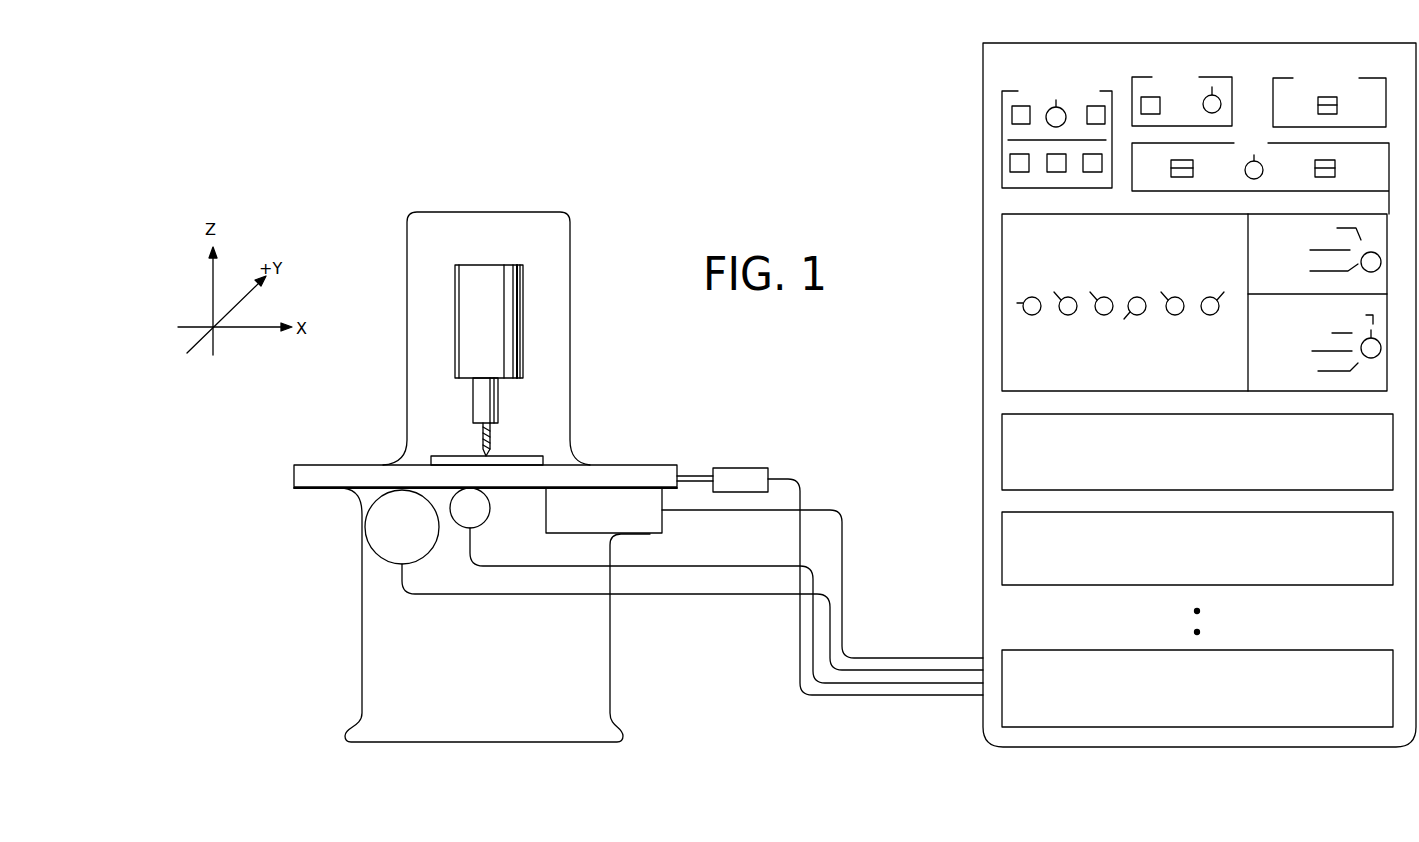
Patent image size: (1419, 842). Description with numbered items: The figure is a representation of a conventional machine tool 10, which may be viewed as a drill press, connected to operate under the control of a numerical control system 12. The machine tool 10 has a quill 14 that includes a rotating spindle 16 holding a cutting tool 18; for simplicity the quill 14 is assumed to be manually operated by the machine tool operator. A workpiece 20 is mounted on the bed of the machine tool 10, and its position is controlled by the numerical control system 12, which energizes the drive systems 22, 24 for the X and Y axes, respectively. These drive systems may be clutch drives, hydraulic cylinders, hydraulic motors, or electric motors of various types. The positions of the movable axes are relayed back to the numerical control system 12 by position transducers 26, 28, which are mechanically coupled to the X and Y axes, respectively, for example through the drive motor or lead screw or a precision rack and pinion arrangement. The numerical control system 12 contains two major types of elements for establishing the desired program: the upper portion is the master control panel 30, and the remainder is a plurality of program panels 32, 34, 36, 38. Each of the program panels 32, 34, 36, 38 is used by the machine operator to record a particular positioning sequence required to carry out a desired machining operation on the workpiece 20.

The machine tool 10 is at (511, 202).
The numerical control system 12 is at (1199, 31).
The quill 14 is at (523, 340).
The rotating spindle 16 is at (498, 411).
The cutting tool 18 is at (490, 444).
The workpiece 20 is at (450, 456).
The drive system 22 is at (662, 522).
The drive system 24 is at (372, 549).
The position transducer 26 is at (484, 522).
The position transducer 28 is at (752, 468).
The master control panel 30 is at (992, 160).
The program panel 32 is at (1000, 364).
The program panel 34 is at (987, 463).
The program panel 36 is at (987, 558).
The program panel 38 is at (985, 707).